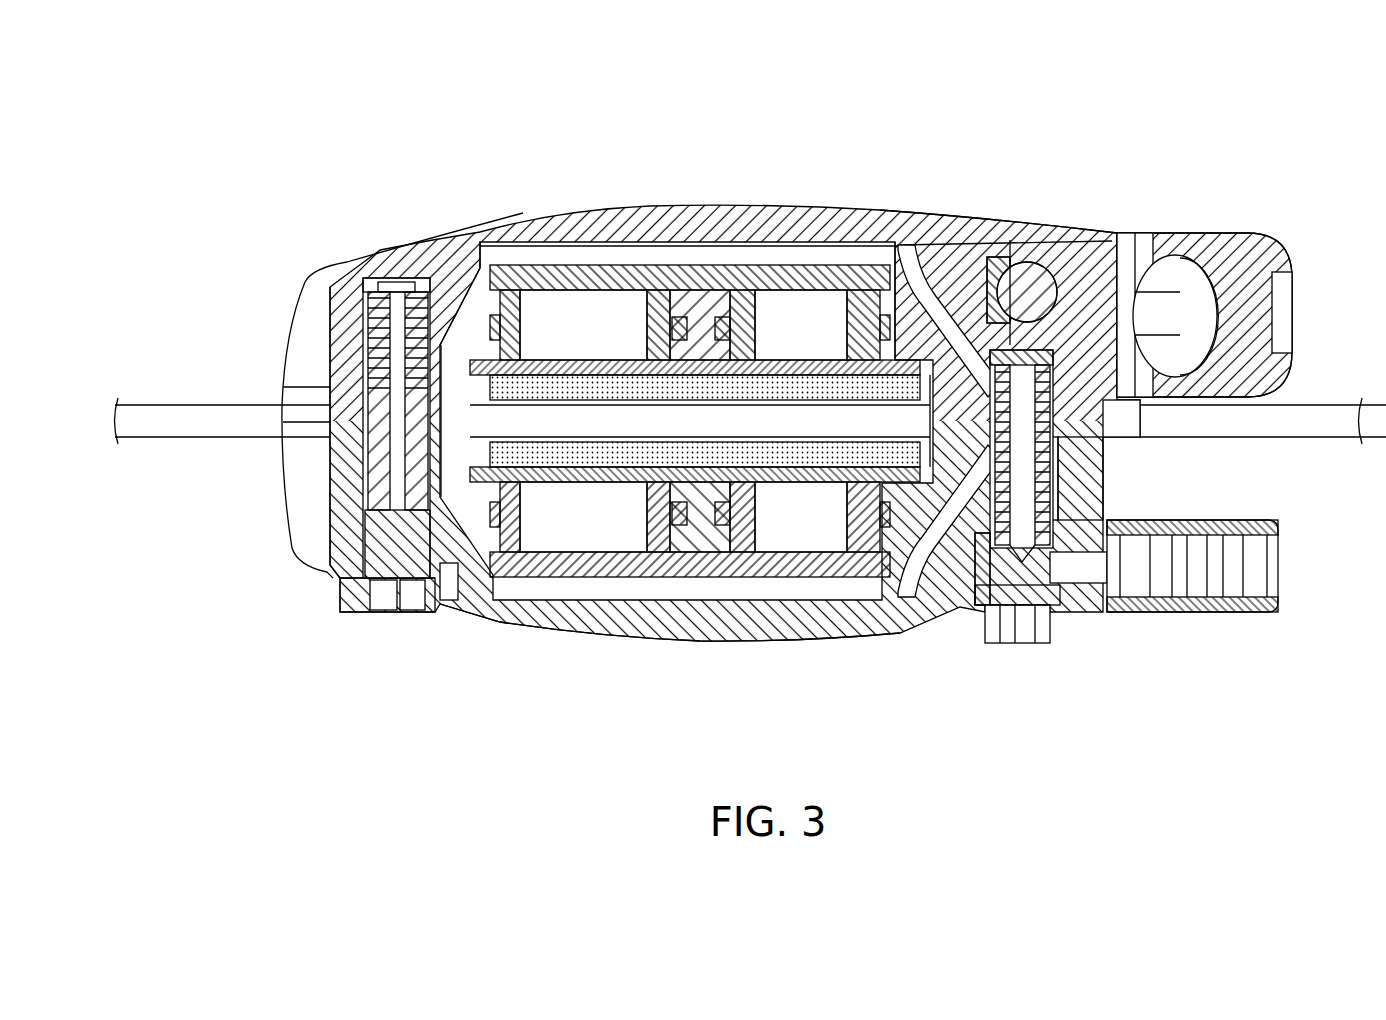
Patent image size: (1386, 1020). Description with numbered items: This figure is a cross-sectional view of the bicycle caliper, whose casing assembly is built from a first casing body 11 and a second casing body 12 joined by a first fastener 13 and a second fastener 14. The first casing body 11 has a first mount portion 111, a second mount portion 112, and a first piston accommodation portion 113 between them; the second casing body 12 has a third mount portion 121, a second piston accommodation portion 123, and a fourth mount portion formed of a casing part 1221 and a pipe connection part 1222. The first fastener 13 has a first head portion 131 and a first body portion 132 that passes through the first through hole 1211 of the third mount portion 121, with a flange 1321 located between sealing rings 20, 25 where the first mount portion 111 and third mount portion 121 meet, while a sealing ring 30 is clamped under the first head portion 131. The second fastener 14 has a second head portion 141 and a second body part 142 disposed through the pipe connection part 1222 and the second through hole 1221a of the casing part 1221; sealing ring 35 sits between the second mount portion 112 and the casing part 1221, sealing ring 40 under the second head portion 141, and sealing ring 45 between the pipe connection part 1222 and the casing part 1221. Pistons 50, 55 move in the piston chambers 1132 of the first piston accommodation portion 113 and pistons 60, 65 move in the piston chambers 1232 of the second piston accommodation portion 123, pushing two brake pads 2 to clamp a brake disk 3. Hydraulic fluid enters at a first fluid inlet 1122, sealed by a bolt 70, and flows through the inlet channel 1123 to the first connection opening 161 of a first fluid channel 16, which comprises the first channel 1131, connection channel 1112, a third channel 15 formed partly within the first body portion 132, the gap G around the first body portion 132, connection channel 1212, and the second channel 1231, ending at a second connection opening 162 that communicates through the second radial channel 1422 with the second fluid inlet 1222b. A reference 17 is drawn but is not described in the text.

The brake pads 2 is at (838, 383).
The brake disk 3 is at (1360, 422).
The first casing body 11 is at (745, 180).
The second casing body 12 is at (720, 648).
The first fastener 13 is at (393, 622).
The second fastener 14 is at (1011, 650).
The third channel 15 is at (400, 288).
The first fluid channel 16 is at (642, 128).
The channel 17 is at (906, 255).
The sealing ring 20 is at (330, 468).
The sealing ring 25 is at (335, 406).
The sealing ring 30 is at (437, 588).
The sealing ring 35 is at (1060, 458).
The sealing ring 40 is at (1035, 578).
The sealing ring 45 is at (1068, 580).
The piston 50 is at (676, 292).
The piston 55 is at (868, 292).
The piston 60 is at (547, 583).
The piston 65 is at (752, 543).
The bolt 70 is at (1012, 292).
The gap G is at (488, 330).
The first mount portion 111 is at (372, 272).
The second mount portion 112 is at (1048, 262).
The first piston accommodation portion 113 is at (760, 226).
The third mount portion 121 is at (340, 540).
The second piston accommodation portion 123 is at (686, 612).
The first head portion 131 is at (352, 598).
The first body portion 132 is at (355, 498).
The second head portion 141 is at (993, 640).
The second body part 142 is at (1063, 470).
The first connection opening 161 is at (915, 297).
The second connection opening 162 is at (890, 590).
The connection channel 1112 is at (450, 292).
The first fluid inlet 1122 is at (1027, 258).
The inlet channel 1123 is at (948, 258).
The first channel 1131 is at (607, 232).
The piston chambers 1132 is at (648, 255).
The first through hole 1211 is at (355, 515).
The connection channel 1212 is at (537, 262).
The casing part 1221 is at (1080, 488).
The second through hole 1221a is at (1058, 497).
The pipe connection part 1222 is at (1130, 606).
The second fluid inlet 1222b is at (1220, 567).
The second channel 1231 is at (588, 350).
The piston chambers 1232 is at (656, 541).
The flange 1321 is at (332, 430).
The second radial channel 1422 is at (1030, 642).